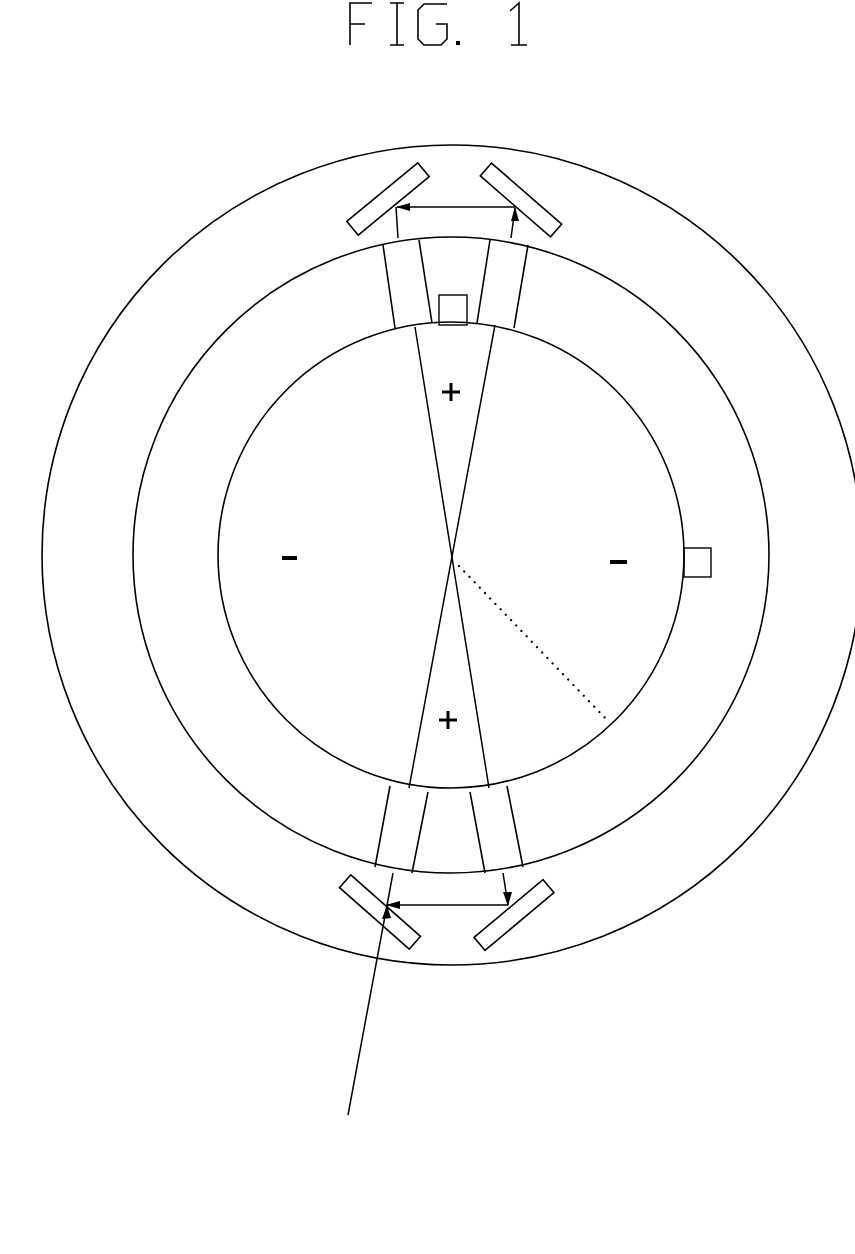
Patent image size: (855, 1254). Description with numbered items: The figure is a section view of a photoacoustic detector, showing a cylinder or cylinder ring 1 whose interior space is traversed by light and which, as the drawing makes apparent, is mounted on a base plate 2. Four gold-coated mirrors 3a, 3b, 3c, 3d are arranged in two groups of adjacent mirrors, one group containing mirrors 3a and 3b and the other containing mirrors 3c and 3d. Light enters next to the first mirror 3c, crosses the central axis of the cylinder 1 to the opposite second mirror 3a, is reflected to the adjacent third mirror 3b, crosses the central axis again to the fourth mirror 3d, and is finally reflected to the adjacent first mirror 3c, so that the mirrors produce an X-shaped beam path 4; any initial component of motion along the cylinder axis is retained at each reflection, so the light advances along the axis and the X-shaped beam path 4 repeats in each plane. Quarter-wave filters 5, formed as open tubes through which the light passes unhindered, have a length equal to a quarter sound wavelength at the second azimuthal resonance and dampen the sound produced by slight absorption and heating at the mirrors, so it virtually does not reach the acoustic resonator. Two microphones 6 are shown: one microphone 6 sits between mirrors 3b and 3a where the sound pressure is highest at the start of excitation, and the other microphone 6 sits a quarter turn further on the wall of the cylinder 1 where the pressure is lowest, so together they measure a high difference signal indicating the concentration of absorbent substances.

The cylinder ring 1 is at (451, 555).
The base plate 2 is at (448, 555).
The second mirror 3a is at (520, 200).
The third mirror 3b is at (388, 198).
The first mirror 3c is at (379, 912).
The fourth mirror 3d is at (514, 916).
The X-shaped beam path 4 is at (433, 659).
The quarter-wave filters 5 is at (451, 556).
The microphones 6 is at (575, 436).